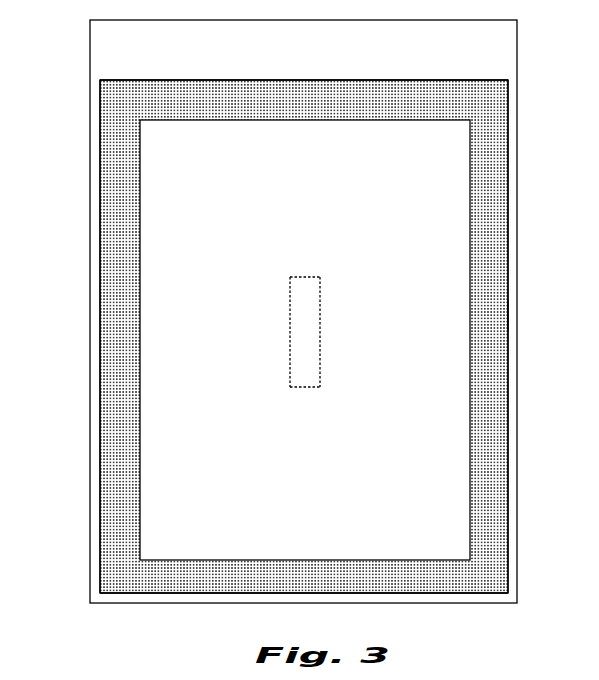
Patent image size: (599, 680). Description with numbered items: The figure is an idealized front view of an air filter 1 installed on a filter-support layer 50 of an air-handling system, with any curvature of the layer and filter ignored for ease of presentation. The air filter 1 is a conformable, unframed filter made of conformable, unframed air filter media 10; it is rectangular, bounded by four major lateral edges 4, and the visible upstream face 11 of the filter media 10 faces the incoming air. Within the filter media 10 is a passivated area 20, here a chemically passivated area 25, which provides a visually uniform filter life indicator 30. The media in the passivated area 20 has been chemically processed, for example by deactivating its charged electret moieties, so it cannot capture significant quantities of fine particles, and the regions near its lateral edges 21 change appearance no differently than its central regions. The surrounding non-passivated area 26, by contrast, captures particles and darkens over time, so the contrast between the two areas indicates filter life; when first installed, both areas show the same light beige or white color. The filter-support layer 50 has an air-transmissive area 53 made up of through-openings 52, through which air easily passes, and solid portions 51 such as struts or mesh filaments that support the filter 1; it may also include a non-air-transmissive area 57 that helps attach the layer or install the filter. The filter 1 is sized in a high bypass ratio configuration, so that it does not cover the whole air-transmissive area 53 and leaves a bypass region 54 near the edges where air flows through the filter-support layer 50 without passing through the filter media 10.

The air filter 1 is at (222, 128).
The major lateral edge 4 is at (153, 562).
The air filter media 10 is at (345, 200).
The upstream face 11 is at (398, 247).
The passivated area 20 is at (300, 323).
The lateral edge of passivated area 21 is at (318, 335).
The chemically passivated area 25 is at (298, 377).
The non-passivated area 26 is at (308, 470).
The visually uniform filter life indicator 30 is at (307, 303).
The filter-support layer 50 is at (100, 47).
The solid portion 51 is at (409, 97).
The through-opening 52 is at (490, 112).
The air-transmissive area 53 is at (110, 127).
The bypass region 54 is at (443, 577).
The non-air-transmissive area 57 is at (512, 315).